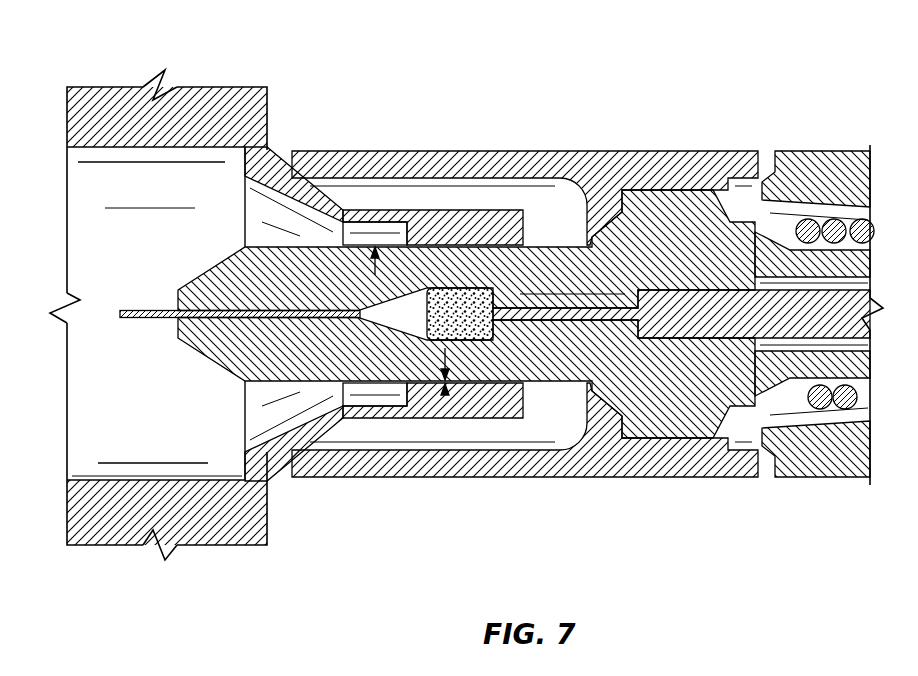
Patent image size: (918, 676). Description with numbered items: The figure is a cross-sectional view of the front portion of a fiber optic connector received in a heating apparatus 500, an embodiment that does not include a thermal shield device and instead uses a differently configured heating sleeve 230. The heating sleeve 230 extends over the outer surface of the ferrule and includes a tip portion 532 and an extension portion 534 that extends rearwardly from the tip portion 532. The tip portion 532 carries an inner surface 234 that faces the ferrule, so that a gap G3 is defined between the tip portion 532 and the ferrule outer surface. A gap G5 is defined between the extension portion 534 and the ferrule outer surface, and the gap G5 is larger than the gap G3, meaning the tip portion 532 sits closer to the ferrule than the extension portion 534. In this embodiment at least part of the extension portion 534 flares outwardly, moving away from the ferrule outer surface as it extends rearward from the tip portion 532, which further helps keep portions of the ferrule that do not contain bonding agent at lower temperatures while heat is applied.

The heating apparatus 500 is at (223, 52).
The heating sleeve 230 is at (80, 128).
The inner surface 234 is at (489, 405).
The gap G5 is at (375, 212).
The gap G3 is at (445, 394).
The tip portion 532 is at (463, 403).
The extension portion 534 is at (378, 420).